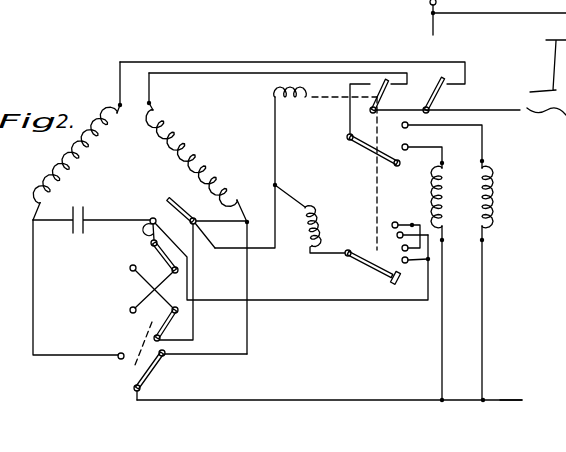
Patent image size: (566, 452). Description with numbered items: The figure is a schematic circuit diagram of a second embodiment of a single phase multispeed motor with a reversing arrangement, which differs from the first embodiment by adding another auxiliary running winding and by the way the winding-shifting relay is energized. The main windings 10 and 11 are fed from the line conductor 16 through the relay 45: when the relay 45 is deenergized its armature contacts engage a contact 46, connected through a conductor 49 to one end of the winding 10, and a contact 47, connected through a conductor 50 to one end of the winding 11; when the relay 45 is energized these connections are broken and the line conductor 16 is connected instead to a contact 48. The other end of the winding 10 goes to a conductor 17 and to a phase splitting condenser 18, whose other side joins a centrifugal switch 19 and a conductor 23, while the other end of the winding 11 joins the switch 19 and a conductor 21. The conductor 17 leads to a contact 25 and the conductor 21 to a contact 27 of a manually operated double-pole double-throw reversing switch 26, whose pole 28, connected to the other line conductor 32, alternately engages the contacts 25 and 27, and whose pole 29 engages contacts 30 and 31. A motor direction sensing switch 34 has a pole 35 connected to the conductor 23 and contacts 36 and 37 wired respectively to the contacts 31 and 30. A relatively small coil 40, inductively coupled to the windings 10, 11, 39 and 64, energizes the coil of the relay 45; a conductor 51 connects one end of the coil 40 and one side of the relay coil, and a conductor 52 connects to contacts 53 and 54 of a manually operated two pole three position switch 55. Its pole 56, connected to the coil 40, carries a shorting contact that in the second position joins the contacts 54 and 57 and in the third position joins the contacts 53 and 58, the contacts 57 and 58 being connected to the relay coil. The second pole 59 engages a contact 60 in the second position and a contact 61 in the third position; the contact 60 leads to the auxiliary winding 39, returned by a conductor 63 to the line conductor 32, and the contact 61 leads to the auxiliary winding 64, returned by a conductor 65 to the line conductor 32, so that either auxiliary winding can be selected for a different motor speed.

The main winding 10 is at (53, 168).
The main winding 11 is at (178, 122).
The line conductor 16 is at (500, 113).
The conductor 17 is at (35, 288).
The phase splitting condenser 18 is at (90, 212).
The centrifugal switch 19 is at (158, 205).
The conductor 21 is at (249, 323).
The conductor 23 is at (150, 219).
The contact 25 is at (118, 354).
The double-pole double-throw switch 26 is at (133, 327).
The contact 27 is at (165, 356).
The pole 28 is at (143, 380).
The pole 29 is at (170, 323).
The contact 30 is at (130, 310).
The contact 31 is at (194, 313).
The line conductor 32 is at (430, 33).
The motor direction sensing switch 34 is at (145, 247).
The pole 35 is at (160, 252).
The contact 36 is at (130, 268).
The contact 37 is at (178, 270).
The auxiliary winding 39 is at (448, 222).
The coil 40 is at (303, 232).
The relay 45 is at (322, 84).
The contact 46 is at (445, 85).
The contact 47 is at (390, 85).
The contact 48 is at (367, 85).
The conductor 49 is at (260, 62).
The conductor 50 is at (270, 97).
The conductor 51 is at (260, 249).
The conductor 52 is at (313, 301).
The contact 53 is at (397, 236).
The contact 54 is at (408, 263).
The switch 55 is at (374, 176).
The pole 56 is at (367, 267).
The contact 57 is at (408, 250).
The contact 58 is at (392, 225).
The pole 59 is at (372, 147).
The contact 60 is at (405, 150).
The contact 61 is at (410, 133).
The conductor 63 is at (444, 338).
The auxiliary winding 64 is at (487, 225).
The conductor 65 is at (484, 307).